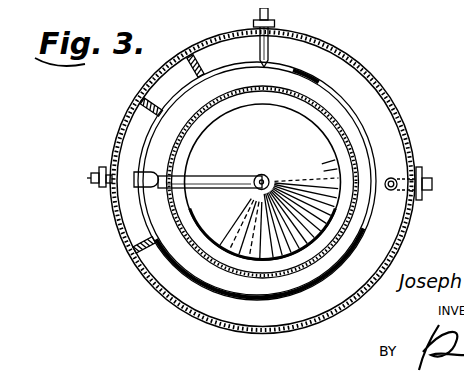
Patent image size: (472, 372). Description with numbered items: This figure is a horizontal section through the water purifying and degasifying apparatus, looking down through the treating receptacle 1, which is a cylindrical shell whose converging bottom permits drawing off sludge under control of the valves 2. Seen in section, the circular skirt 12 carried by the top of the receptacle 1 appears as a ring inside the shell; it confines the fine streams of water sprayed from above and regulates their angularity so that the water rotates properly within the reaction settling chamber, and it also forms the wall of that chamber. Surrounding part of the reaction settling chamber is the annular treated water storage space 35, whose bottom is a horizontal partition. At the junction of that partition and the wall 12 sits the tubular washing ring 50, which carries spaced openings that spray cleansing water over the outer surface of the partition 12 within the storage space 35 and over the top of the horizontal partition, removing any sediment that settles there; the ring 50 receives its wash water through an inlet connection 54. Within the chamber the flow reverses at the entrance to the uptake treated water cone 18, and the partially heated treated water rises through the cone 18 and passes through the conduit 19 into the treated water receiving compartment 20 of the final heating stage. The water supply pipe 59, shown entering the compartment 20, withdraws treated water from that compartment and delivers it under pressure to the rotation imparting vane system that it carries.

The treating receptacle 1 is at (409, 144).
The valves 2 is at (429, 177).
The circular skirt 12 is at (351, 143).
The uptake treated water cone 18 is at (291, 130).
The conduit 19 is at (217, 178).
The treated water receiving compartment 20 is at (133, 213).
The treated water storage space 35 is at (160, 192).
The washing ring 50 is at (308, 72).
The inlet connection 54 is at (271, 13).
The water supply pipe 59 is at (92, 174).